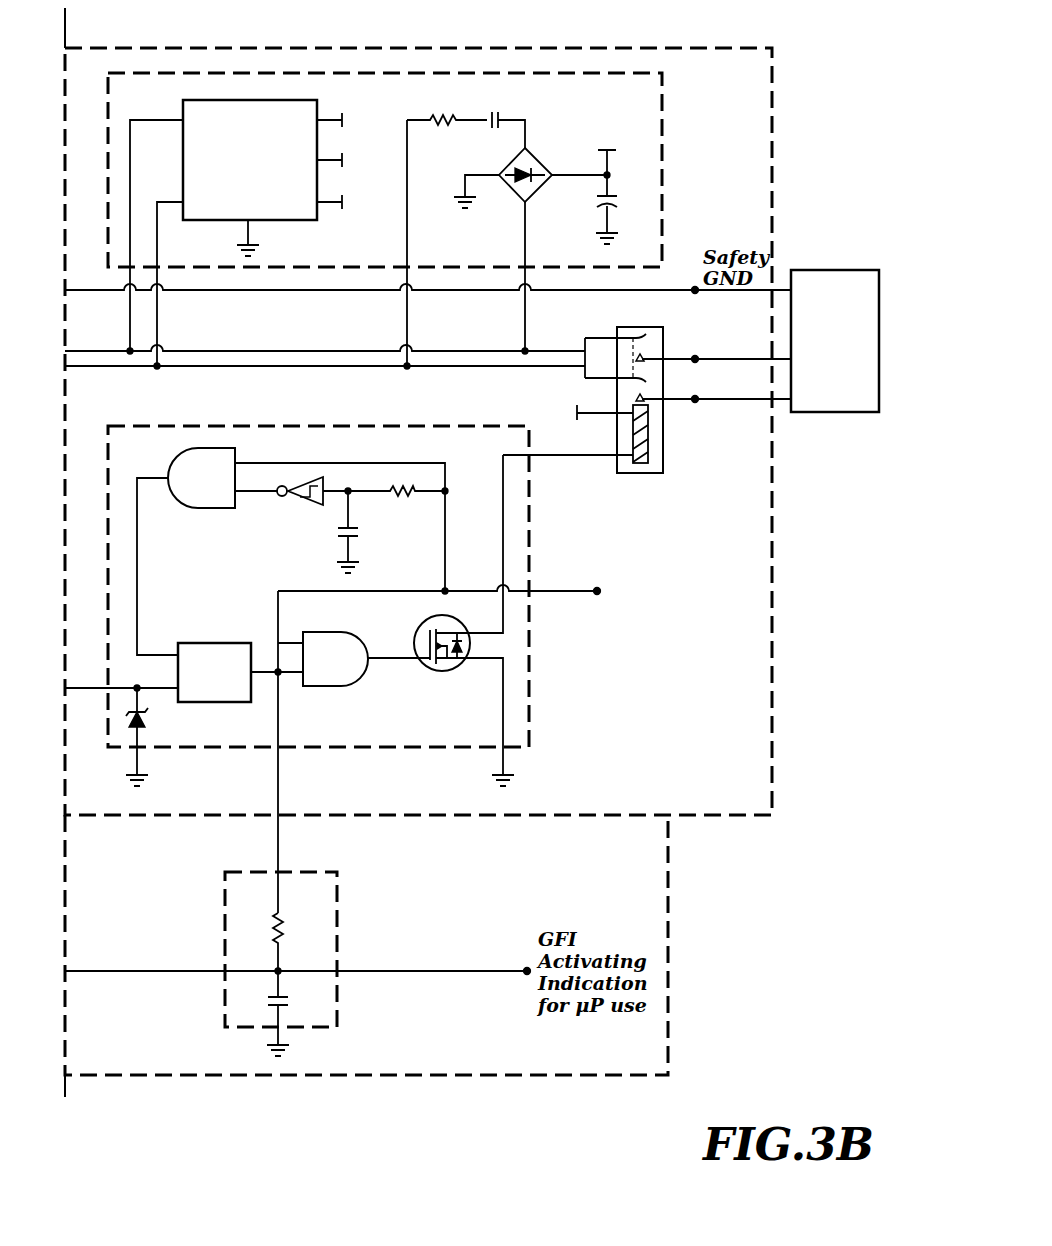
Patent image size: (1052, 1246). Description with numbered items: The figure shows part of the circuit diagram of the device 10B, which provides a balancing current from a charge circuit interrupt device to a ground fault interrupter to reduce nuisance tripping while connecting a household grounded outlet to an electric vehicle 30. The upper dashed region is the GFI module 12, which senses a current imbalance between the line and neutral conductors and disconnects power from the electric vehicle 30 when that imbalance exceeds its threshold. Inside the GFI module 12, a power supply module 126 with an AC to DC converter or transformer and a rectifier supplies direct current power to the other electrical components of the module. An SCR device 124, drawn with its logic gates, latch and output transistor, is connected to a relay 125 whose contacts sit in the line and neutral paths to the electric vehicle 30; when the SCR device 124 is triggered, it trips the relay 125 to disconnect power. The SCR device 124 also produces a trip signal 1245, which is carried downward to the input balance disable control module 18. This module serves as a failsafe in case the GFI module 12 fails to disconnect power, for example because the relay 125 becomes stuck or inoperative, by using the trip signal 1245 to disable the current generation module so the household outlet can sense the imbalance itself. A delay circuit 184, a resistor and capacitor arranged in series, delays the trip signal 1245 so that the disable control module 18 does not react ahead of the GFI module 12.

The GFI module 12 is at (745, 48).
The power supply module 126 is at (662, 100).
The electric vehicle 30 is at (840, 270).
The relay 125 is at (663, 450).
The SCR device 124 is at (529, 718).
The trip signal 1245 is at (278, 772).
The delay circuit 184 is at (337, 993).
The input balance disable control module 18 is at (668, 1048).
The device 10B is at (788, 1014).